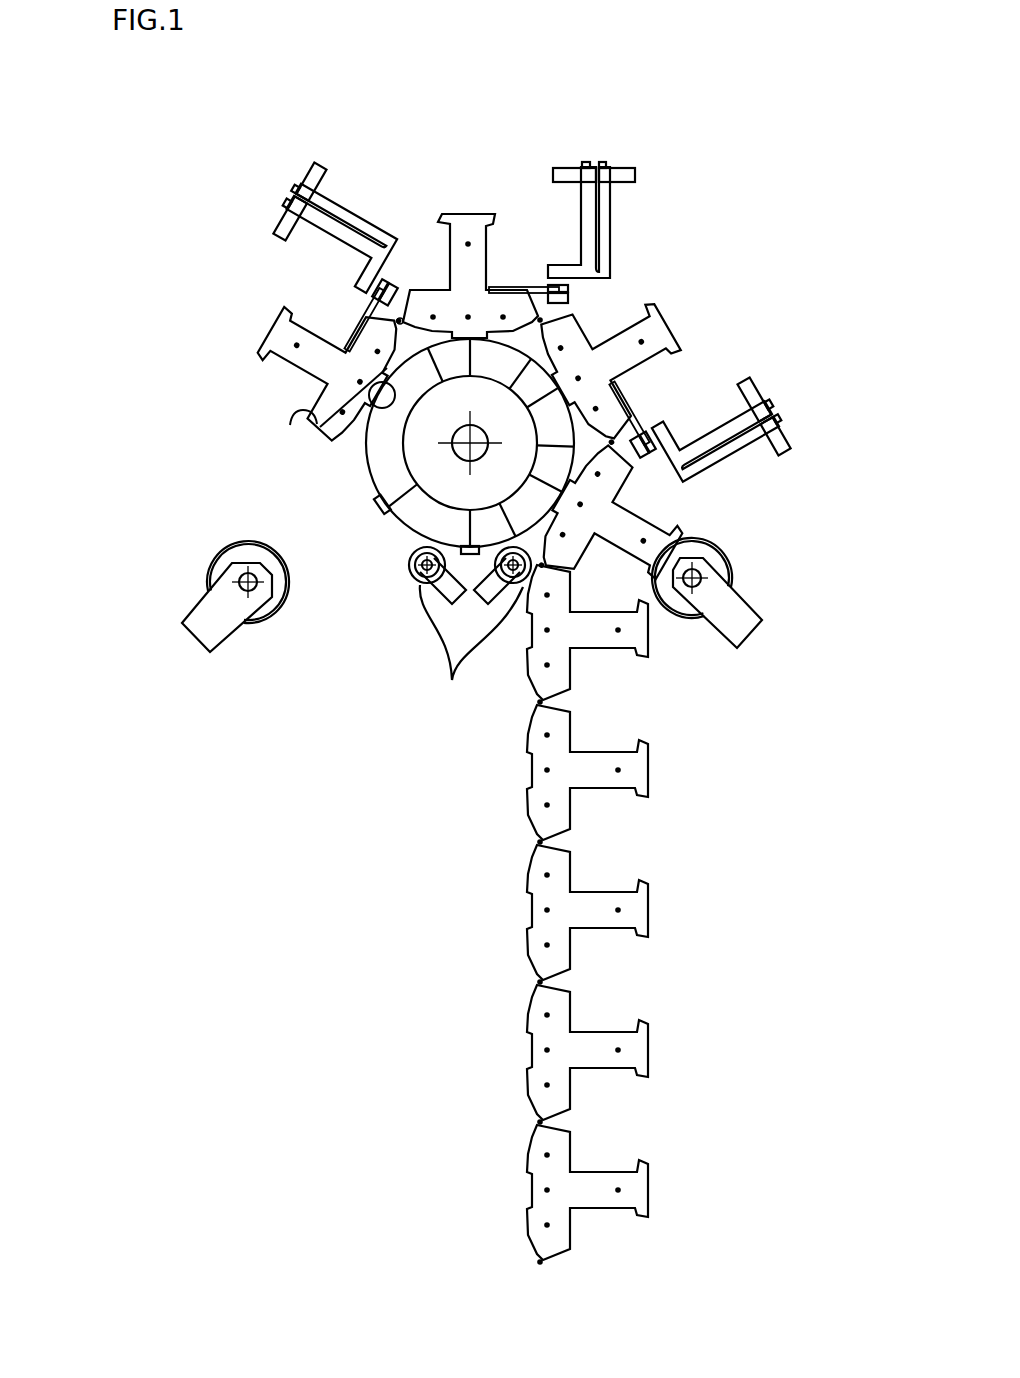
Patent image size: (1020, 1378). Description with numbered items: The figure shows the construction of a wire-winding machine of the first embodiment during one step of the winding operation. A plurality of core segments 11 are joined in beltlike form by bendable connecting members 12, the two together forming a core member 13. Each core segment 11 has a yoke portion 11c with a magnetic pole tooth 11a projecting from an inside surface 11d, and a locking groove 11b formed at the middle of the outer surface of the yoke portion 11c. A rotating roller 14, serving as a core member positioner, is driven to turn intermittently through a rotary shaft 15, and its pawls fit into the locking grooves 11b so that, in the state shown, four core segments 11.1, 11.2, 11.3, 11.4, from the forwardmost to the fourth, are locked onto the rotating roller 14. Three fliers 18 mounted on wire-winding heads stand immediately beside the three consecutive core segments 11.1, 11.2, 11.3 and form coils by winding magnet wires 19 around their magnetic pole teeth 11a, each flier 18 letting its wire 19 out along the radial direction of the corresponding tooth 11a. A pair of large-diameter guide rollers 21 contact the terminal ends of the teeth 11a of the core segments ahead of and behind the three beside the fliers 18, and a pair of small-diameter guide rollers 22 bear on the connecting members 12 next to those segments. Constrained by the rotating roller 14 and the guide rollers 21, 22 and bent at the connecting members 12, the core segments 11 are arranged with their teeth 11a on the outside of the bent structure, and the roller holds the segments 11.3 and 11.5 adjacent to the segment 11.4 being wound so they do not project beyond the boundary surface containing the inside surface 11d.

The core segments 11 is at (80, 479).
The forwardmost core segment 11.1 is at (287, 337).
The second core segment 11.2 is at (463, 214).
The third core segment 11.3 is at (663, 337).
The fourth core segment 11.4 is at (655, 524).
The fifth core segment 11.5 is at (647, 642).
The magnetic pole tooth 11a is at (328, 383).
The locking groove 11b is at (365, 405).
The yoke portion 11c is at (345, 393).
The inside surface 11d is at (290, 425).
The connecting members 12 is at (400, 325).
The core member 13 is at (136, 273).
The rotating roller 14 is at (378, 498).
The rotary shaft 15 is at (462, 453).
The fliers 18 is at (337, 200).
The magnet wires 19 is at (370, 297).
The large-diameter guide rollers 21 is at (210, 567).
The small-diameter guide rollers 22 is at (470, 637).